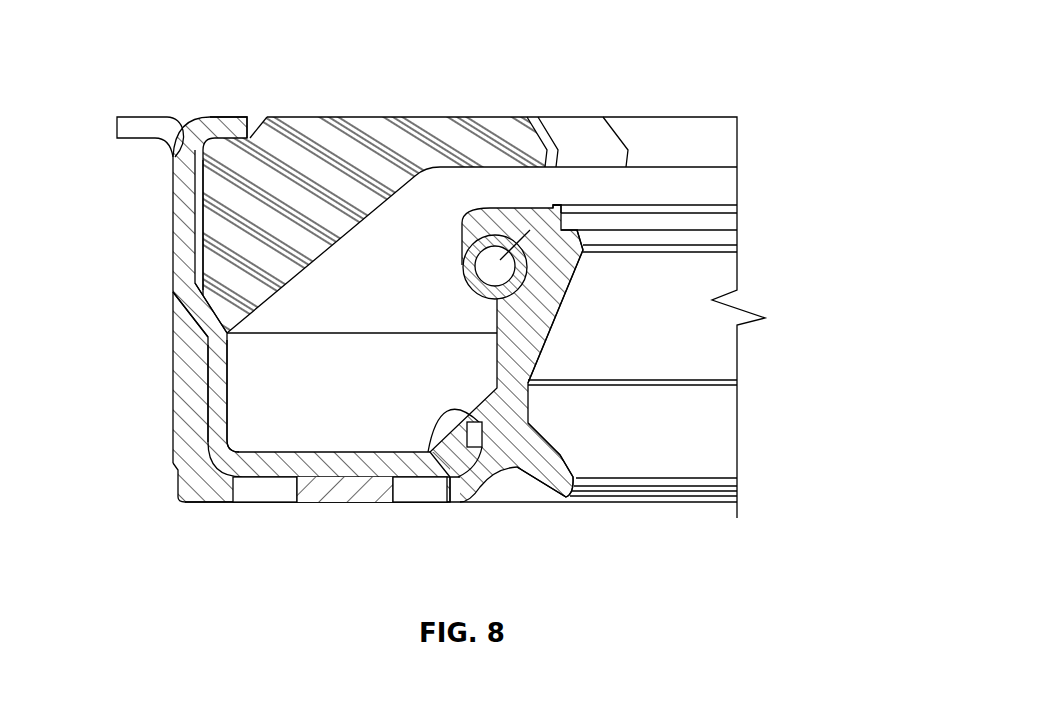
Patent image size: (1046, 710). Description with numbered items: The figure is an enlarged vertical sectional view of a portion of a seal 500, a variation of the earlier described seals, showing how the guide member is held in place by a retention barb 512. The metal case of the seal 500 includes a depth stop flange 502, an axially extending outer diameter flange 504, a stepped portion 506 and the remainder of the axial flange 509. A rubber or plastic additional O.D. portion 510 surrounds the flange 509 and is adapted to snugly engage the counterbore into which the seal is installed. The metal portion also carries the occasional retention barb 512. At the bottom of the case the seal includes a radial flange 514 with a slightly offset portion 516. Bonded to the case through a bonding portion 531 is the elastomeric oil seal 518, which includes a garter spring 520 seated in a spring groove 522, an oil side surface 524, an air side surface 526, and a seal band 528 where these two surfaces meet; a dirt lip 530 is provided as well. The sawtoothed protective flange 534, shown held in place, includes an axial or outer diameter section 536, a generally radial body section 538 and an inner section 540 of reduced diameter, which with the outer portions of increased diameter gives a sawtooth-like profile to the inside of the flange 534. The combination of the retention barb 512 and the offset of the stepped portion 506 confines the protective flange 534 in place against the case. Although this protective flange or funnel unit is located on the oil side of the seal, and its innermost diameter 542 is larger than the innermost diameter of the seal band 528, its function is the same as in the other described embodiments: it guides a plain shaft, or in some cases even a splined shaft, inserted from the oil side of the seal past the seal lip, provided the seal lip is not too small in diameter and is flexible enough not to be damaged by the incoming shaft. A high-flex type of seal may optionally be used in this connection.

The seal 500 is at (770, 331).
The depth stop flange 502 is at (137, 127).
The axially extending outer diameter flange 504 is at (273, 267).
The stepped portion 506 is at (185, 320).
The remainder of the axial flange 509 is at (217, 378).
The additional O.D. portion 510 is at (292, 421).
The retention barb 512 is at (225, 124).
The radial flange 514 is at (260, 473).
The offset portion 516 is at (455, 486).
The elastomeric oil seal 518 is at (514, 336).
The garter spring 520 is at (462, 262).
The spring groove 522 is at (522, 256).
The oil side surface 524 is at (578, 210).
The air side surface 526 is at (560, 312).
The seal band 528 is at (587, 250).
The dirt lip 530 is at (565, 480).
The bonding portion 531 is at (447, 425).
The sawtoothed protective flange 534 is at (321, 100).
The axial or outer diameter section 536 is at (215, 207).
The generally radial body section 538 is at (341, 180).
The inner section 540 is at (486, 125).
The innermost diameter 542 is at (548, 120).